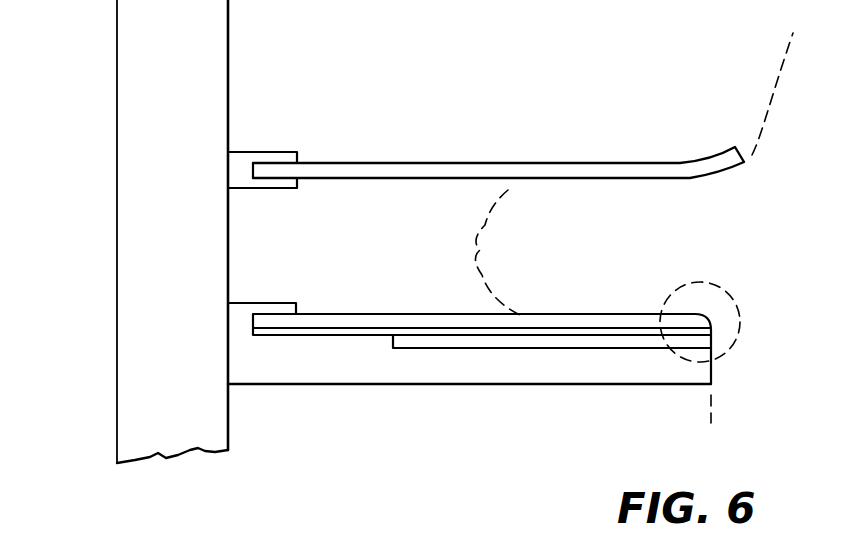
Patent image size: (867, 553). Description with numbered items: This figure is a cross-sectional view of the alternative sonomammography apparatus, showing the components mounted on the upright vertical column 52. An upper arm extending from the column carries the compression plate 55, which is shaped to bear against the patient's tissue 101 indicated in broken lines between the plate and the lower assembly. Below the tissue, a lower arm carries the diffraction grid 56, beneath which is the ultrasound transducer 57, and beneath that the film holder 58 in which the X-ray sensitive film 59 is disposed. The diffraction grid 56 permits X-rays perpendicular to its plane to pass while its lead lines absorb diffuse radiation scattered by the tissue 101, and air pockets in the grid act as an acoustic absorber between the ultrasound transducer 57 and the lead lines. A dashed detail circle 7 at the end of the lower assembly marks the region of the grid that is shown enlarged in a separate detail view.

The upright vertical column 52 is at (181, 180).
The compression plate 55 is at (403, 168).
The diffraction grid 56 is at (318, 322).
The ultrasound transducer 57 is at (298, 335).
The film holder 58 is at (430, 374).
The X-ray sensitive film 59 is at (550, 344).
The patient's tissue 101 is at (586, 262).
The detail circle FIG. 7 is at (733, 300).